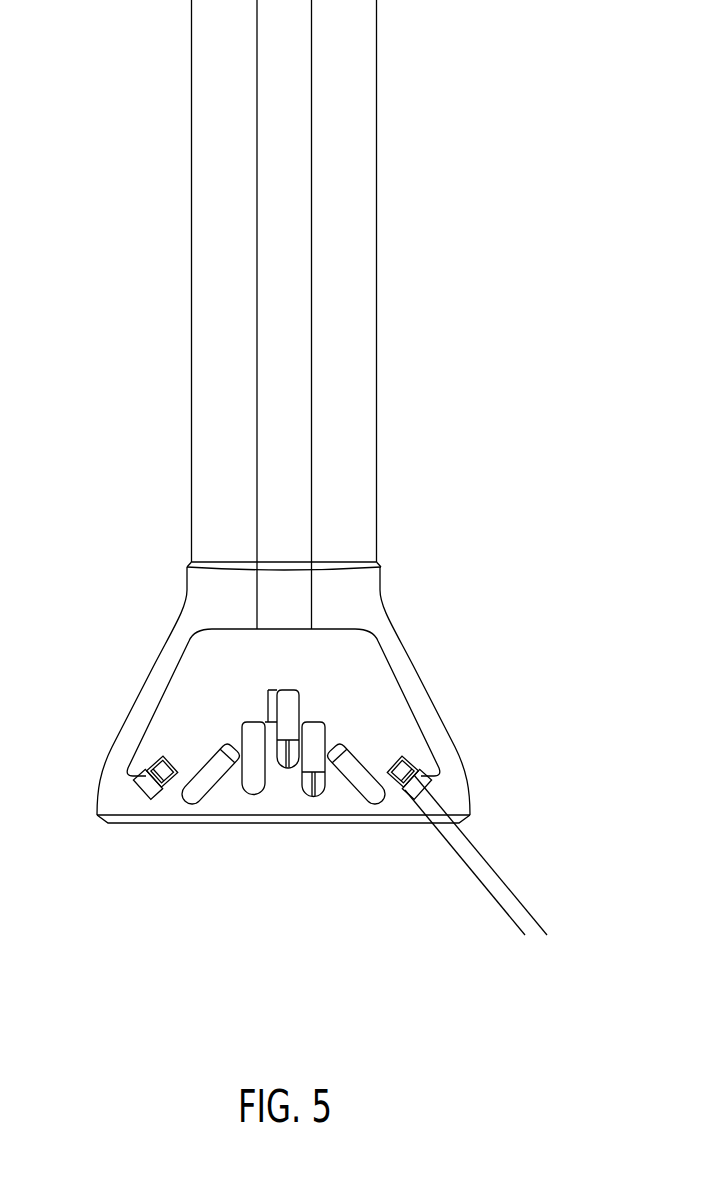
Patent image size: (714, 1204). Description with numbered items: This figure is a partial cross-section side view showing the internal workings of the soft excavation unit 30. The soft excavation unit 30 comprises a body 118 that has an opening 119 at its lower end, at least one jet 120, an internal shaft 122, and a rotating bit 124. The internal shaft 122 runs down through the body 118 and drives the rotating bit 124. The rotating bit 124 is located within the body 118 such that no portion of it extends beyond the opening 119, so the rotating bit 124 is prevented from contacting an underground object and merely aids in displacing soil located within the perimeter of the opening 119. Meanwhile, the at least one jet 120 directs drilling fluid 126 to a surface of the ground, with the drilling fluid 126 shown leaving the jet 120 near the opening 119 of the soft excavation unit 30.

The soft excavation unit 30 is at (115, 375).
The body 118 is at (377, 412).
The opening 119 is at (255, 863).
The jet 120 is at (422, 788).
The internal shaft 122 is at (312, 473).
The rotating bit 124 is at (142, 727).
The drilling fluid 126 is at (517, 897).